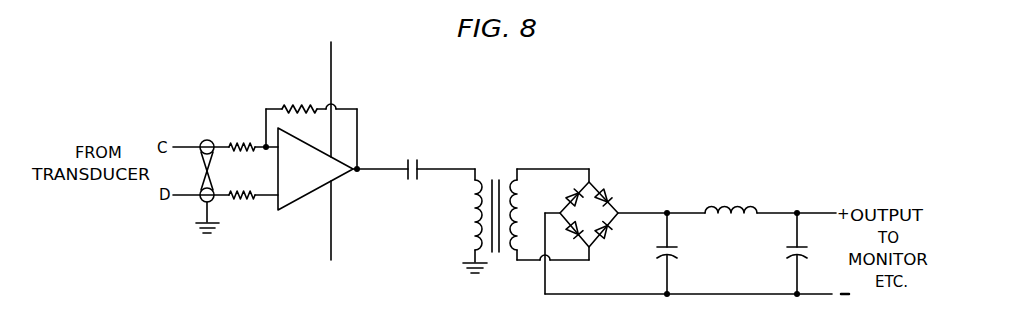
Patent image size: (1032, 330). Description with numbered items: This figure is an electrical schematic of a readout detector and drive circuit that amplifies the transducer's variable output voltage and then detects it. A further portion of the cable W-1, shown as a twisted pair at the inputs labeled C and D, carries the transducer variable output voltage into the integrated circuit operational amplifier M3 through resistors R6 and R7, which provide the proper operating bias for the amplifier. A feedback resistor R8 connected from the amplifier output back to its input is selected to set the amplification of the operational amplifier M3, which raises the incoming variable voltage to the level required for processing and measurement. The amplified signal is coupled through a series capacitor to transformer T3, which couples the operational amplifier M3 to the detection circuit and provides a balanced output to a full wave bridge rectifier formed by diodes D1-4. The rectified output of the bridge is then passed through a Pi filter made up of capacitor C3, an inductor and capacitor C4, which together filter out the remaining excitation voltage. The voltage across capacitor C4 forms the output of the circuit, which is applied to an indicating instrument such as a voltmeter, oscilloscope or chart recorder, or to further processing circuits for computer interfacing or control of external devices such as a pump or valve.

The cable W-1 is at (207, 137).
The resistor R6 is at (253, 134).
The resistor R7 is at (253, 182).
The resistor R8 is at (311, 124).
The integrated circuit operational amplifier M3 is at (315, 152).
The transformer T3 is at (490, 205).
The diodes D1-4 is at (589, 214).
The capacitor C3 is at (683, 253).
The capacitor C4 is at (811, 253).